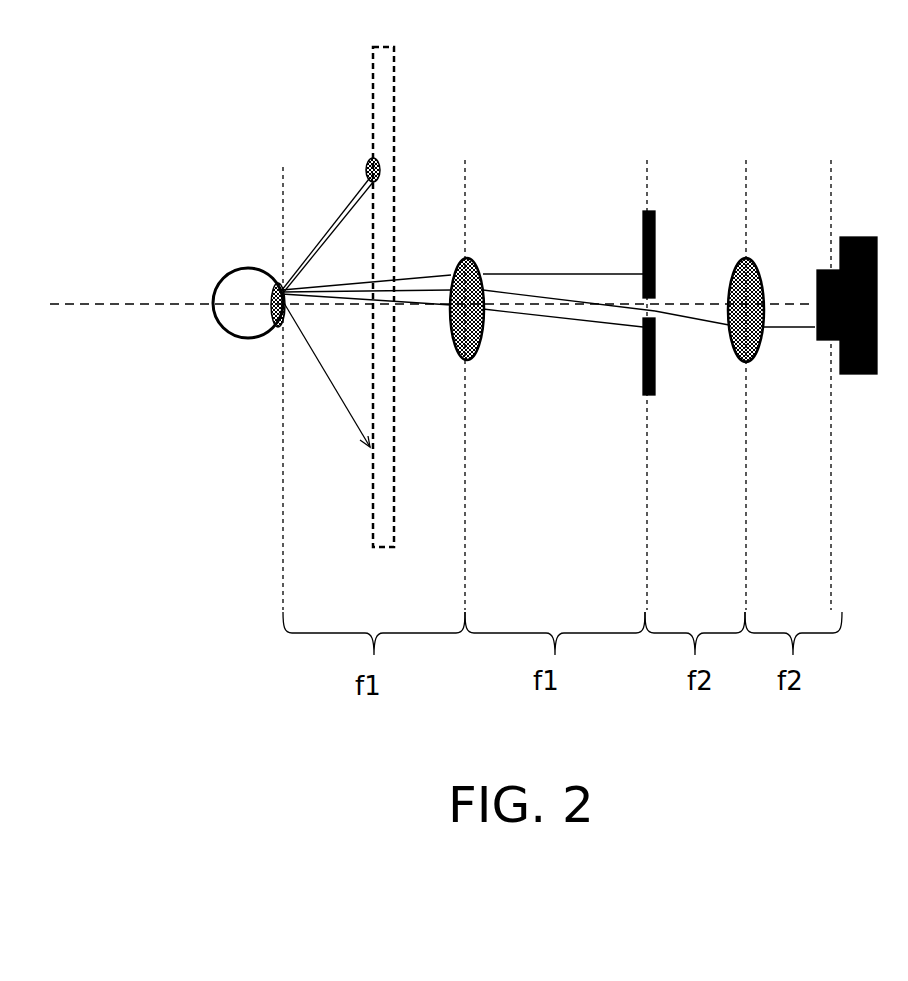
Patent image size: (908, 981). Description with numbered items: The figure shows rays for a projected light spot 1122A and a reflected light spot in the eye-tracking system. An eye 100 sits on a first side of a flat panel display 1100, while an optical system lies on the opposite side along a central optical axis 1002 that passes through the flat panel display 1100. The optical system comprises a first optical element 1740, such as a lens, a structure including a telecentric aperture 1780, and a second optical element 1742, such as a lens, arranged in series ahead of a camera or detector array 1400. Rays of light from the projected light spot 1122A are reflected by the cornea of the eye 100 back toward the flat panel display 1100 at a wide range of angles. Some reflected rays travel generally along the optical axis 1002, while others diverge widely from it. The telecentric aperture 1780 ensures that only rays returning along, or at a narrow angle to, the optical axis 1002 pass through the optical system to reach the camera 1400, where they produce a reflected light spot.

The eye 100 is at (212, 322).
The central axis 1002 is at (123, 302).
The projected light spot 1122A is at (366, 162).
The flat panel display 1100 is at (374, 323).
The first optical element 1740 is at (474, 291).
The telecentric aperture 1780 is at (647, 205).
The second optical element 1742 is at (766, 286).
The camera 1400 is at (859, 280).